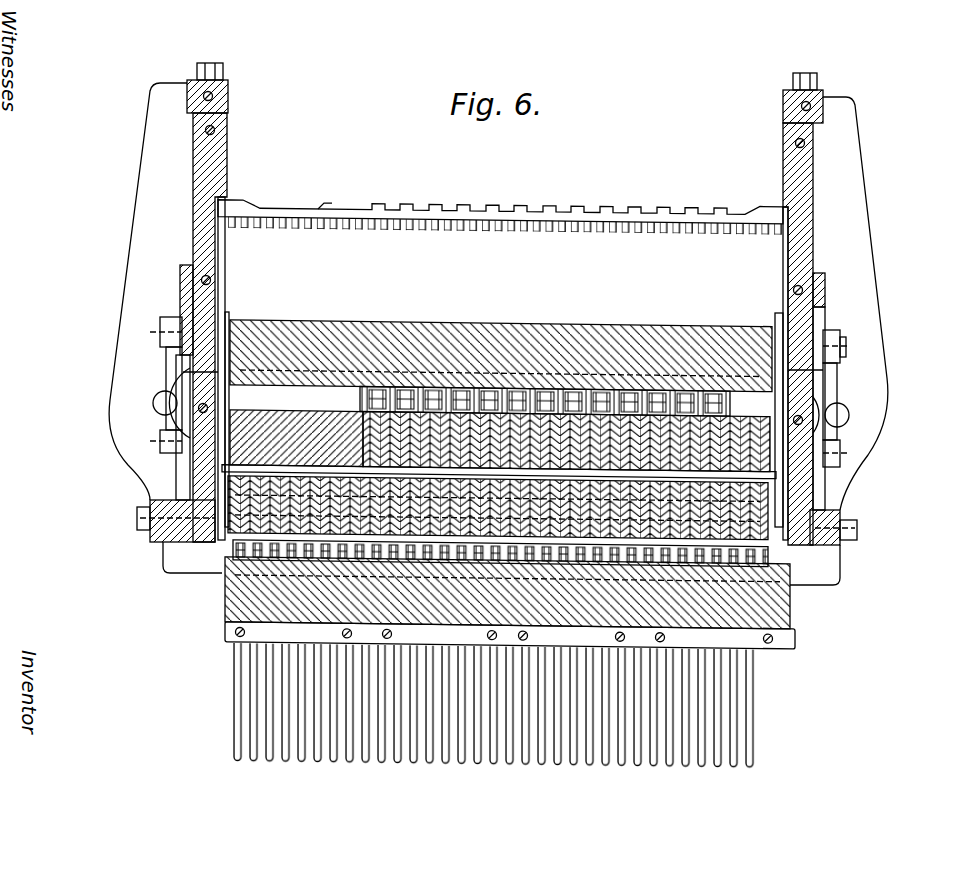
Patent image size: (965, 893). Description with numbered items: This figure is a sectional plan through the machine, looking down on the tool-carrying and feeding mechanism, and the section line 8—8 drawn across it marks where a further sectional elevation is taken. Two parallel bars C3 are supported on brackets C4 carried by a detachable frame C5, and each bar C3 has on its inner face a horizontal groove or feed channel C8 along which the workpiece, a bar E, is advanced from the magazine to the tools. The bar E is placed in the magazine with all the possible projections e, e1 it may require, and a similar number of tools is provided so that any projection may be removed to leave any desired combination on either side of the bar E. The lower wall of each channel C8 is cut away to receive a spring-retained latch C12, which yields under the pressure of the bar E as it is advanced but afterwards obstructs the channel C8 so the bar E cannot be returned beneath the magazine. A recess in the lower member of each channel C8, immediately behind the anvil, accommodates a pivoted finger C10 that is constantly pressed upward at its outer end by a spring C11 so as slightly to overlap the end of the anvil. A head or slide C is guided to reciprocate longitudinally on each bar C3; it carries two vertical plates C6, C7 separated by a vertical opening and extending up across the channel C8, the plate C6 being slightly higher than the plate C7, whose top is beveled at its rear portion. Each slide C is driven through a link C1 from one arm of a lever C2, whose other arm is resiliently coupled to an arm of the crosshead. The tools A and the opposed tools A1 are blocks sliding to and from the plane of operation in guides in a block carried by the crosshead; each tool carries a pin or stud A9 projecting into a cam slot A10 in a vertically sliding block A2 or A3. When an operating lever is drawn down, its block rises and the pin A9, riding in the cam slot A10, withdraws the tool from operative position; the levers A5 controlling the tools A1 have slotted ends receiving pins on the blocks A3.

The detachable frame C5 is at (152, 192).
The bars C3 is at (206, 150).
The brackets C4 is at (228, 99).
The latch C12 is at (221, 258).
The groove or channel C8 is at (226, 335).
The lever C2 is at (180, 300).
The link C1 is at (182, 330).
The pivoted finger C10 is at (215, 372).
The spring C11 is at (160, 405).
The plate C7 is at (165, 445).
The head or slide C is at (183, 445).
The section line 8 is at (155, 485).
The plate C6 is at (215, 468).
The workpiece bar E is at (446, 389).
The projection e is at (505, 239).
The projection e1 is at (322, 206).
The cam-slotted block A2 is at (472, 402).
The cam slot A10 is at (362, 402).
The pin or stud A9 is at (400, 402).
The tools A is at (518, 440).
The tools A1 is at (512, 542).
The cam-slotted block A3 is at (348, 542).
The lever A5 is at (560, 724).